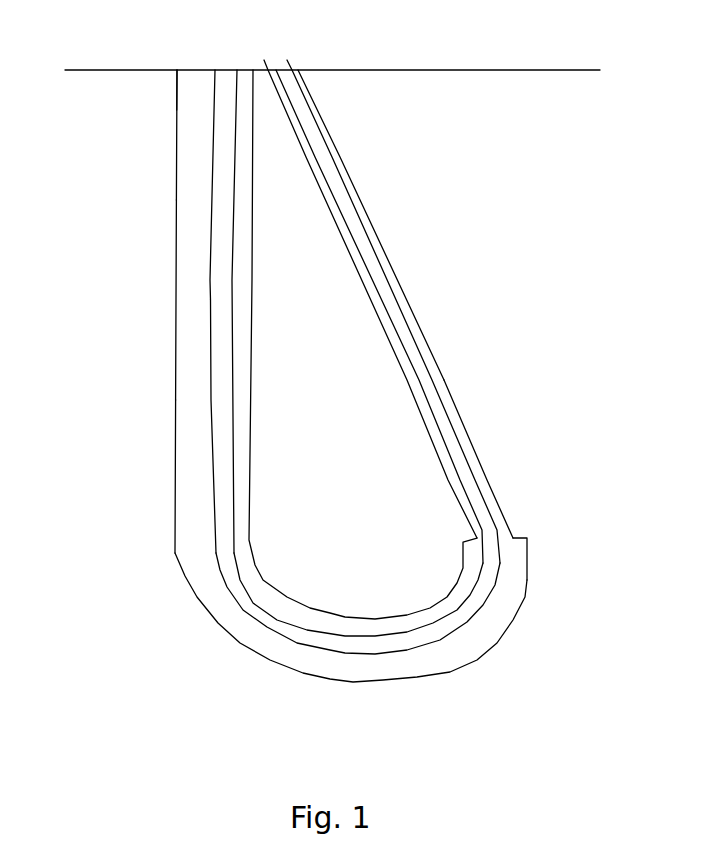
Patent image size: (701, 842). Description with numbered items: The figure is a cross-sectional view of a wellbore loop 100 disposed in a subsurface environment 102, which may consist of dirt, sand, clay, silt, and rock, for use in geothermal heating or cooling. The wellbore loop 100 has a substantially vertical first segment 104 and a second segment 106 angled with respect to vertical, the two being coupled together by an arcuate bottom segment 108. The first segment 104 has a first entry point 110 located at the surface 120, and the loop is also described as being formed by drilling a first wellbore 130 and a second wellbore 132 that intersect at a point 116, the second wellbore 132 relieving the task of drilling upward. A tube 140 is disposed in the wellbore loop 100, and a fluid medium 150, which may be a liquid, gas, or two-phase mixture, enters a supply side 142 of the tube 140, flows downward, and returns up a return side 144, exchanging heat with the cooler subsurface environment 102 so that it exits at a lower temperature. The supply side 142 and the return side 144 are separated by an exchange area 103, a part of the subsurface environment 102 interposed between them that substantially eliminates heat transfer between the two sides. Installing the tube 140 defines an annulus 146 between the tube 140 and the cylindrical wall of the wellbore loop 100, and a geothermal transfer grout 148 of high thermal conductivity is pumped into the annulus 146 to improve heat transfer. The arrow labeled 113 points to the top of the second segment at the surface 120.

The wellbore loop 100 is at (175, 97).
The subsurface environment 102 is at (577, 174).
The exchange area 103 is at (367, 428).
The first segment 104 is at (175, 263).
The second segment 106 is at (390, 263).
The arcuate bottom segment 108 is at (341, 682).
The first entry point 110 is at (188, 58).
The right wall top 113 is at (301, 60).
The intersection point 116 is at (512, 537).
The surface 120 is at (407, 70).
The first wellbore 130 is at (175, 440).
The second wellbore 132 is at (463, 423).
The tube 140 is at (210, 123).
The supply side 142 is at (210, 340).
The return side 144 is at (422, 360).
The annulus 146 is at (195, 515).
The geothermal transfer grout 148 is at (195, 555).
The fluid medium 150 is at (225, 160).